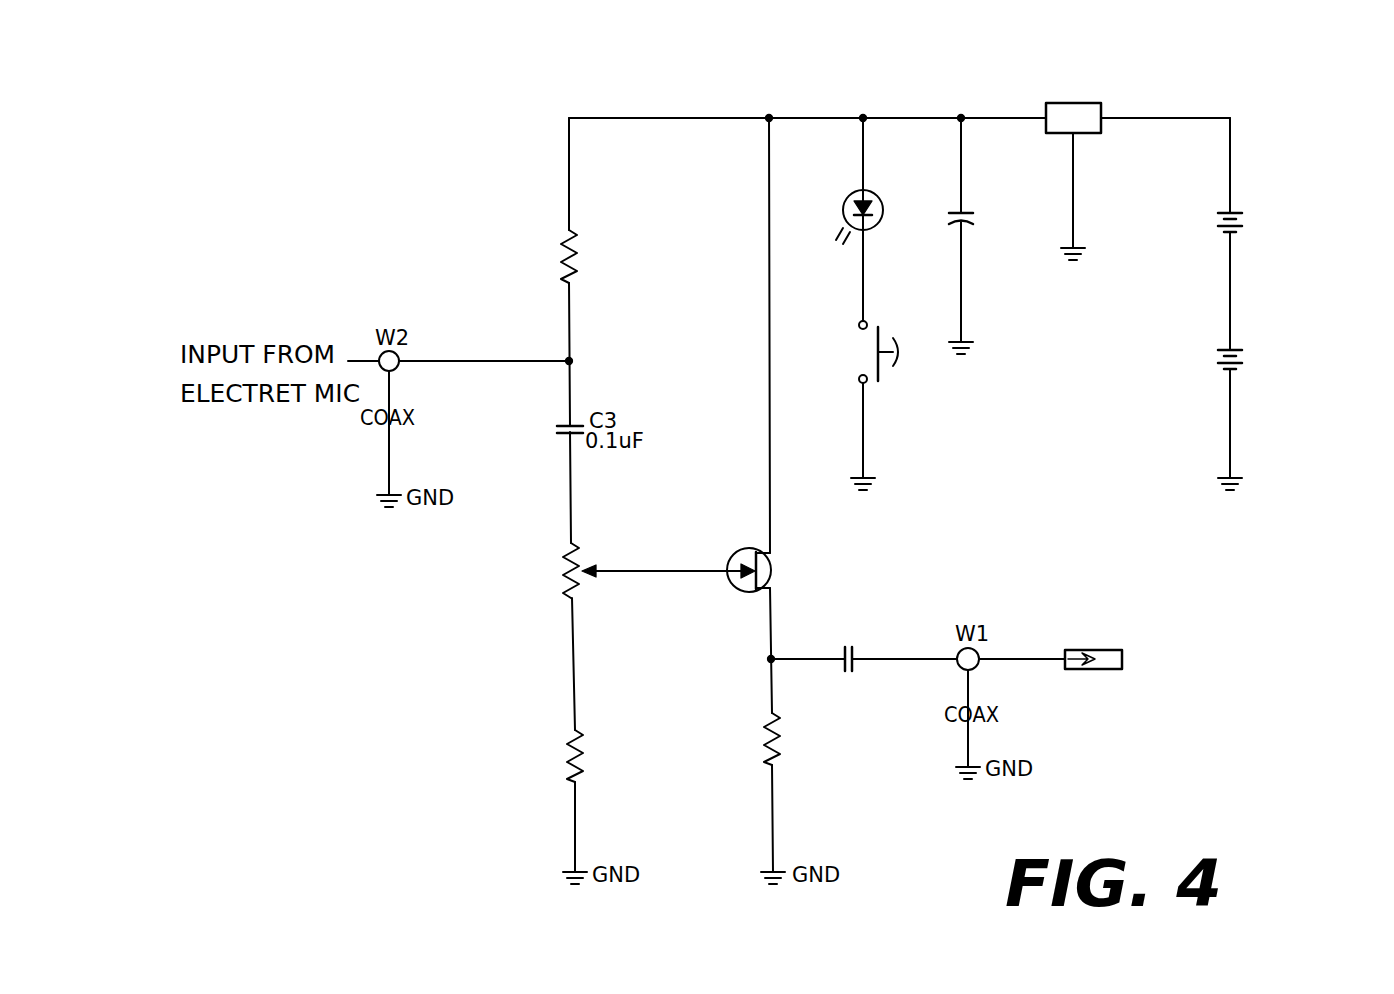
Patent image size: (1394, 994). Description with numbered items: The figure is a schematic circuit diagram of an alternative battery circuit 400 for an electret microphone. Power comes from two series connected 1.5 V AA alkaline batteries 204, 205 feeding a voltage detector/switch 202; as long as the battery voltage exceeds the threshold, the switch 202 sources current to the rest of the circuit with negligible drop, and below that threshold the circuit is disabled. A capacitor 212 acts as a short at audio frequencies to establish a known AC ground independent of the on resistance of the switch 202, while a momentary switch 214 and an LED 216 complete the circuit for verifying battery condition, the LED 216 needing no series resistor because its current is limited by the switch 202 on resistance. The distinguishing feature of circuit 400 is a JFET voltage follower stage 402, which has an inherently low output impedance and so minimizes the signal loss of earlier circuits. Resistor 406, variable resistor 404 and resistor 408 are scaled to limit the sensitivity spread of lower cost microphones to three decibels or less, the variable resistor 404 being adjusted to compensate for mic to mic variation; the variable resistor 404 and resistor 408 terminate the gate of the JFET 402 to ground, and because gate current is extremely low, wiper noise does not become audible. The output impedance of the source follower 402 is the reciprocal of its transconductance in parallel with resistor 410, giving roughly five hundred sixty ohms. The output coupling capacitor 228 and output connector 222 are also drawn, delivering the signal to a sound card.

The battery circuit 400 is at (462, 176).
The JFET voltage follower stage 402 is at (773, 573).
The variable resistor 404 is at (570, 596).
The resistor 406 is at (575, 280).
The resistor 408 is at (578, 747).
The resistor 410 is at (773, 757).
The voltage detector/switch 202 is at (1100, 68).
The battery 204 is at (1228, 212).
The battery 205 is at (1229, 351).
The capacitor 212 is at (963, 228).
The momentary switch 214 is at (897, 366).
The LED 216 is at (852, 193).
The audio output connector P1 222 is at (1120, 650).
The capacitor C2 228 is at (855, 655).